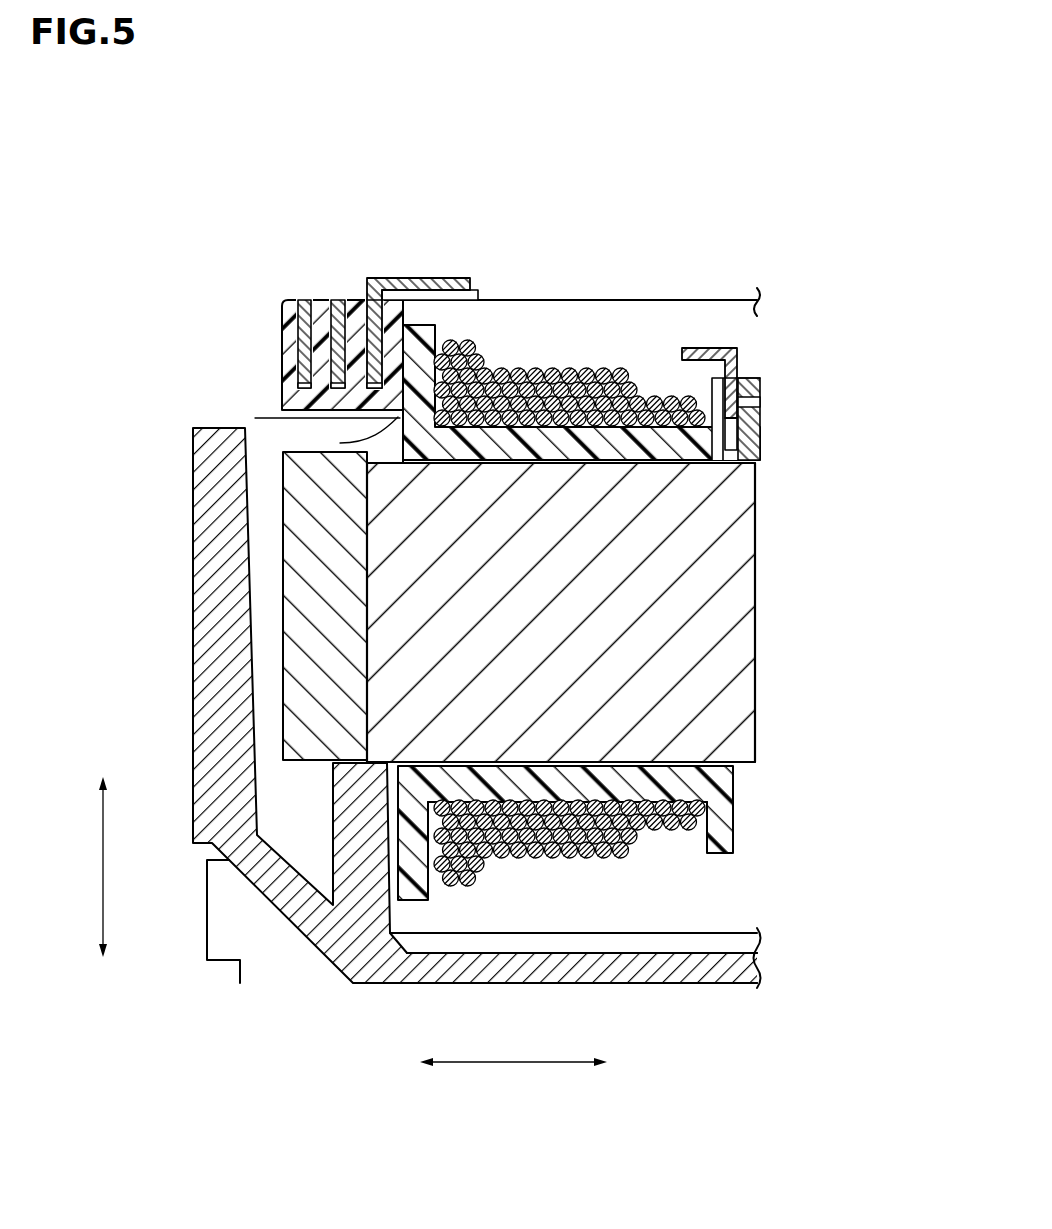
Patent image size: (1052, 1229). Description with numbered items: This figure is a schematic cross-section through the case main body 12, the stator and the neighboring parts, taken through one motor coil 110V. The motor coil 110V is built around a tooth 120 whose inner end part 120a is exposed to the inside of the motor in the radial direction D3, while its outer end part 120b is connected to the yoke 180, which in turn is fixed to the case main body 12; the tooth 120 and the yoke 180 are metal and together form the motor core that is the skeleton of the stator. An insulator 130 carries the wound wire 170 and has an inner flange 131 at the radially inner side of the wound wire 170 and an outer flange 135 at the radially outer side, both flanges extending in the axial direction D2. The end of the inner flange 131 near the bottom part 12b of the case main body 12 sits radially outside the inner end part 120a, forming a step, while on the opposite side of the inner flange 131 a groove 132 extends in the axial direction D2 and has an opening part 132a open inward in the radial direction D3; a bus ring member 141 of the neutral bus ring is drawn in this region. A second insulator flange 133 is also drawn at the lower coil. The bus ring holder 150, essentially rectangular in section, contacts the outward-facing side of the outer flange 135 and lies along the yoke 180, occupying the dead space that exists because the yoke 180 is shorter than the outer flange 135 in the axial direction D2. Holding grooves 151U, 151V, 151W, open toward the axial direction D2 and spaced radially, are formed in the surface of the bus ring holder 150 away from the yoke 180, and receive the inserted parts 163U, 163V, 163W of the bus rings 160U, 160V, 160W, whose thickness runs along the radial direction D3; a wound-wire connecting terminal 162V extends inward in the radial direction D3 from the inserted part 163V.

The case main body 12 is at (210, 728).
The bottom part 12b is at (683, 972).
The motor coil 110V is at (805, 538).
The tooth 120 is at (491, 612).
The inner end part 120a is at (745, 604).
The outer end part 120b is at (368, 637).
The insulator 130 is at (625, 805).
The inner flange 131 is at (750, 430).
The groove 132 is at (737, 432).
The opening part 132a is at (760, 401).
The lower insulator 133 is at (720, 820).
The outer flange 135 is at (436, 326).
The bus ring member 141 is at (737, 353).
The bus ring holder 150 is at (282, 408).
The holding groove 151U is at (283, 400).
The holding groove 151V is at (340, 443).
The holding groove 151W is at (255, 418).
The bus ring 160U is at (249, 314).
The bus ring 160V is at (390, 275).
The bus ring 160W is at (267, 296).
The wound-wire connecting terminal 162V is at (396, 278).
The inserted part 163U is at (283, 322).
The inserted part 163V is at (342, 299).
The inserted part 163W is at (300, 350).
The wound wire 170 is at (582, 372).
The yoke 180 is at (300, 568).
The axial direction D2 is at (103, 890).
The radial direction D3 is at (510, 1063).